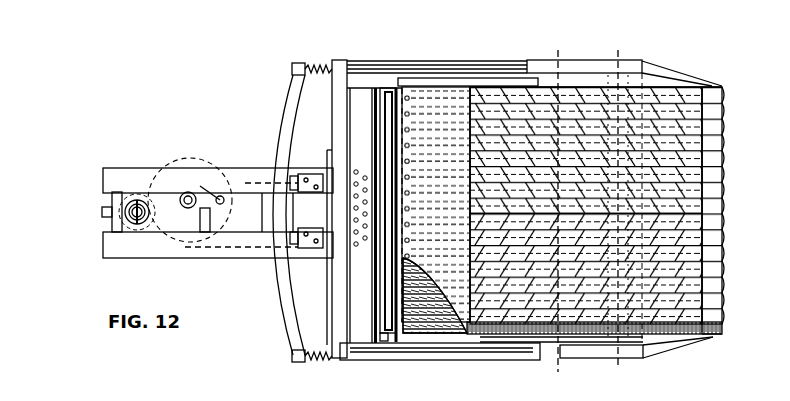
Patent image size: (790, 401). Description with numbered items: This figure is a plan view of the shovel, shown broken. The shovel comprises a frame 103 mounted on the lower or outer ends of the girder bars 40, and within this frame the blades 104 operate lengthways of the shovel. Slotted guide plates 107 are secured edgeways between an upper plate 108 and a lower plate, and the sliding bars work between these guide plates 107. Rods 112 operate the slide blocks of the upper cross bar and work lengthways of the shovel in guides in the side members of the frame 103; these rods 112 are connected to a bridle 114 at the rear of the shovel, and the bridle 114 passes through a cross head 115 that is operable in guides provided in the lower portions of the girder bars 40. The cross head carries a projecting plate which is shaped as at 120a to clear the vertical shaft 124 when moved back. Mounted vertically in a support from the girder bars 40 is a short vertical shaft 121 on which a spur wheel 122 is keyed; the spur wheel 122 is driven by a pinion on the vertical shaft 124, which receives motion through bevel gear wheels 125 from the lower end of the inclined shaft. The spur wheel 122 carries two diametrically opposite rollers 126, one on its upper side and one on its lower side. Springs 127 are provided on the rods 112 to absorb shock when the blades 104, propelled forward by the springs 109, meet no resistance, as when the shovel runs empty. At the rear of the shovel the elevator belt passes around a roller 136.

The girder bars 40 is at (238, 182).
The frame 103 is at (442, 78).
The blades 104 is at (683, 142).
The guide plates 107 is at (427, 110).
The upper plate 108 is at (447, 185).
The springs 109 is at (428, 330).
The rods 112 is at (417, 60).
The bridle 114 is at (283, 110).
The cross head 115 is at (275, 217).
The shaped portion of projecting plate 120a is at (205, 234).
The short vertical shaft 121 is at (186, 208).
The spur wheel 122 is at (213, 165).
The vertical shaft 124 is at (133, 200).
The bevel gear wheels 125 is at (137, 226).
The rollers 126 is at (206, 196).
The springs 127 is at (312, 62).
The roller 136 is at (383, 157).